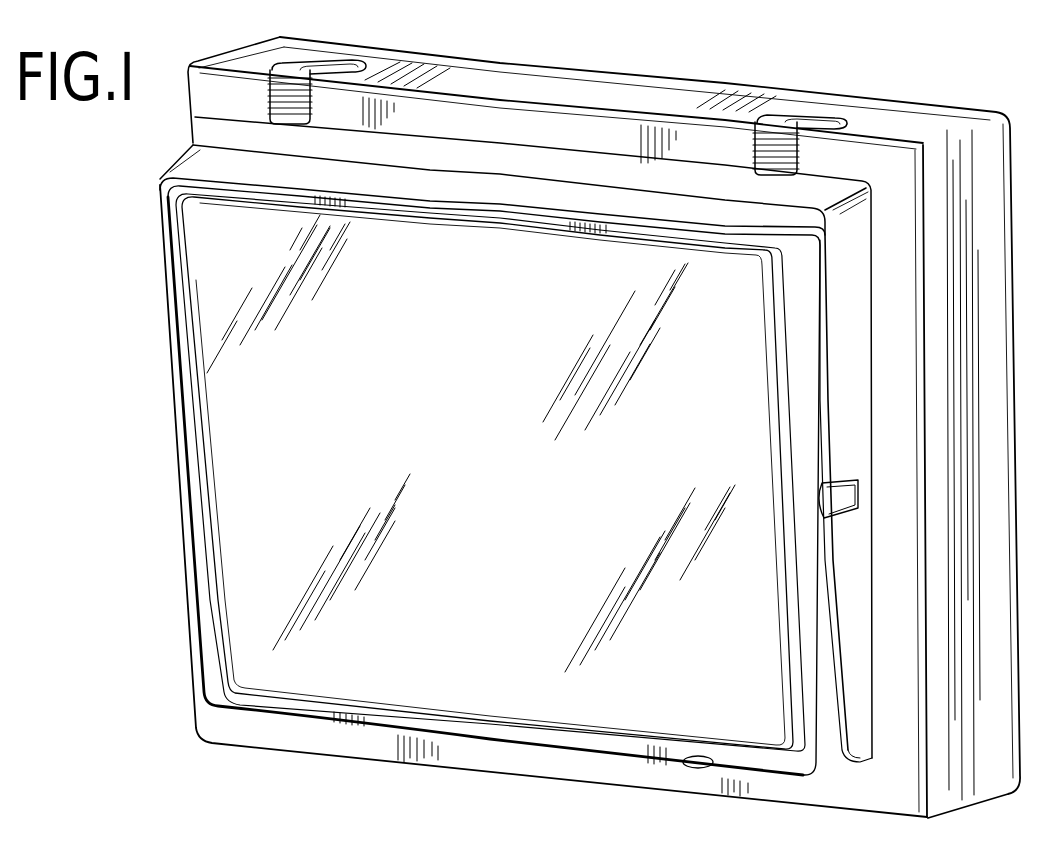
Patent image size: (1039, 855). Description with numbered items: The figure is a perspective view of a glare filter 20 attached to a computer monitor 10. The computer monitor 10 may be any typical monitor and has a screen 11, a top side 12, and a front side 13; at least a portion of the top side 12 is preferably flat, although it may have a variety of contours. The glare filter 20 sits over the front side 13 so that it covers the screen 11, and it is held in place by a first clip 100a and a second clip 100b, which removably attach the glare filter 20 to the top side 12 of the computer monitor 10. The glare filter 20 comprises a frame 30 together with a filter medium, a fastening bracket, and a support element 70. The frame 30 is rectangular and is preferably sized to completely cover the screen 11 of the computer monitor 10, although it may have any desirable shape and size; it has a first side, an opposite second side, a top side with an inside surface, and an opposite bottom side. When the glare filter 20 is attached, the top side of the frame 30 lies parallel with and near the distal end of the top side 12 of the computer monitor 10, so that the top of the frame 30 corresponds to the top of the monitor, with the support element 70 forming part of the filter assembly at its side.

The computer monitor 10 is at (948, 105).
The screen 11 is at (444, 392).
The top side 12 is at (637, 97).
The front side 13 is at (428, 122).
The glare filter 20 is at (181, 420).
The frame 30 is at (805, 476).
The support element 70 is at (850, 358).
The first clip 100a is at (841, 120).
The second clip 100b is at (362, 66).